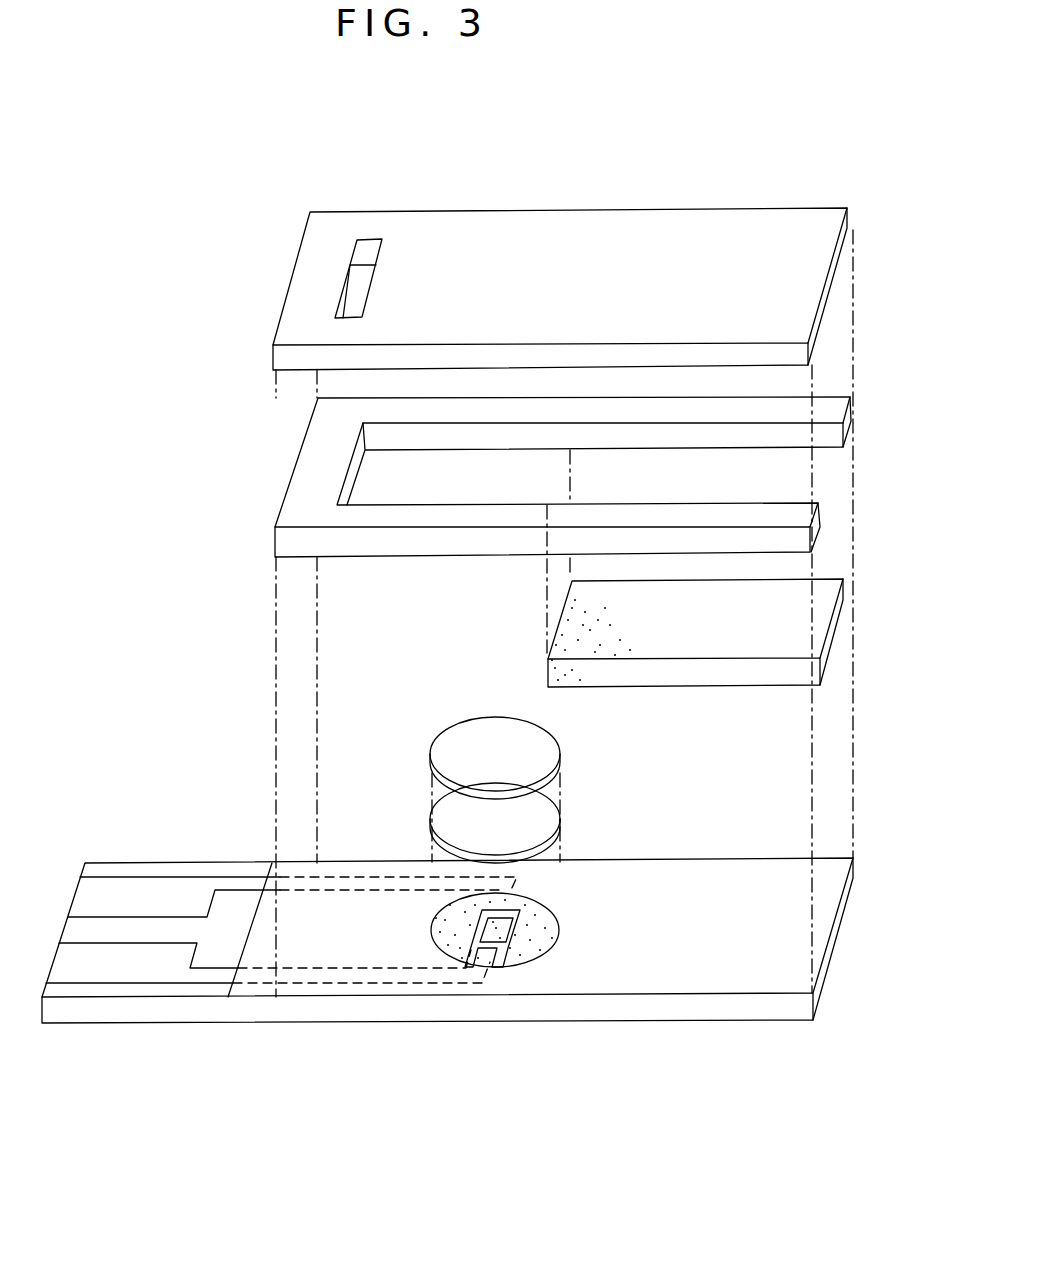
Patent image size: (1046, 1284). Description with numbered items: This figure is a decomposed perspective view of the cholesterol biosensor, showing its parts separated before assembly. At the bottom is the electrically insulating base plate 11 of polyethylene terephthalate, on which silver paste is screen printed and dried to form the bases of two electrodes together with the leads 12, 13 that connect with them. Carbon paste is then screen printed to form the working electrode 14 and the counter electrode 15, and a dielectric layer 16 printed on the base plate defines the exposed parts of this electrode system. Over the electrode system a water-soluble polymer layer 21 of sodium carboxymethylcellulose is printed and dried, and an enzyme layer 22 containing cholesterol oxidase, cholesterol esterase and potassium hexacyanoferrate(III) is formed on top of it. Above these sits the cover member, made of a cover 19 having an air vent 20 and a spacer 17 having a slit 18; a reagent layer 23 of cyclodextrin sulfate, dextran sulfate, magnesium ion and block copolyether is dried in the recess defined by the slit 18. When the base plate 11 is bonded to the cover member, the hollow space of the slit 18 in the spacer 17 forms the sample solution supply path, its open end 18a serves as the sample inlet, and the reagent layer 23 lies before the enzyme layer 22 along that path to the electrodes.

The base plate 11 is at (693, 1010).
The lead 12 is at (128, 968).
The lead 13 is at (140, 900).
The working electrode 14 is at (498, 932).
The counter electrode 15 is at (455, 938).
The dielectric layer 16 is at (350, 945).
The spacer 17 is at (318, 470).
The slit 18 is at (445, 492).
The open end 18a is at (818, 474).
The cover 19 is at (318, 262).
The air vent 20 is at (363, 278).
The water-soluble polymer layer 21 is at (460, 816).
The enzyme layer 22 is at (460, 760).
The reagent layer 23 is at (703, 640).